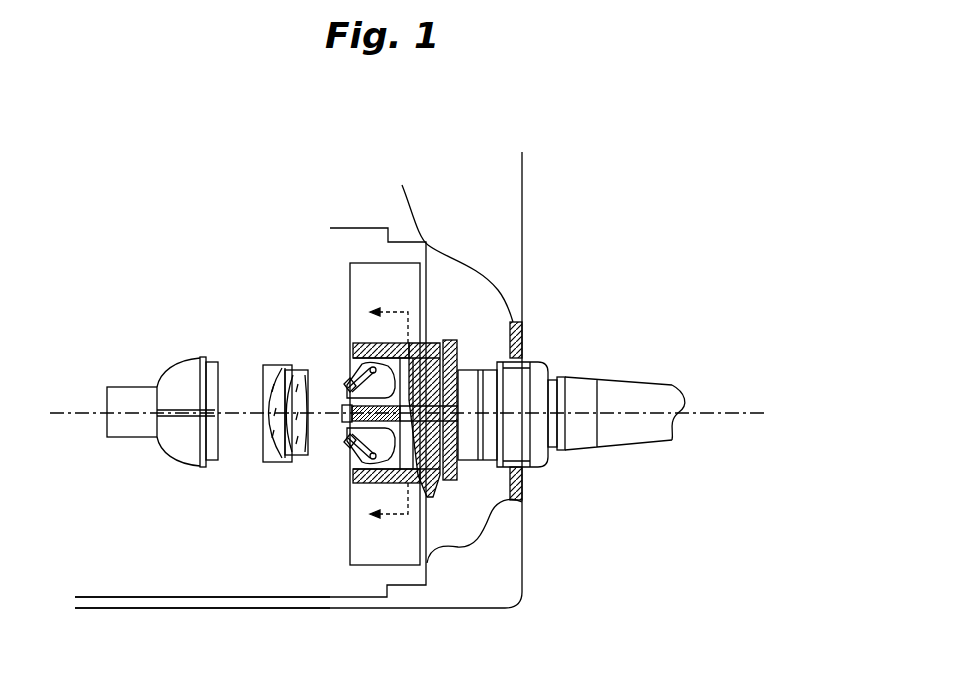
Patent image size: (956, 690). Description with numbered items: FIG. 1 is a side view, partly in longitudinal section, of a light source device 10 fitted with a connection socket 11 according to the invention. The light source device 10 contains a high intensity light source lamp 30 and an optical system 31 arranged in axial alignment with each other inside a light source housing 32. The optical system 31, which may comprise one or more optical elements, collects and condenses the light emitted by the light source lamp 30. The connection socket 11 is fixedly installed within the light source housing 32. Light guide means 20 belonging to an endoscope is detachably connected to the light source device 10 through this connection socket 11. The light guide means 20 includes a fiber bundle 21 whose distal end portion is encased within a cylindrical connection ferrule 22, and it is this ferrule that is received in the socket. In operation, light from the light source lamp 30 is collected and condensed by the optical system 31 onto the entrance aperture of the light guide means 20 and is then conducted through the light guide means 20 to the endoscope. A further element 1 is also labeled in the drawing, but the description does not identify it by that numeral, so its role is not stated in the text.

The light receiving element / blade 1 is at (345, 380).
The light source device 10 is at (571, 266).
The connection socket 11 is at (459, 488).
The light guide means 20 is at (568, 366).
The fiber bundle 21 is at (345, 432).
The connection ferrule 22 is at (447, 380).
The light source lamp 30 is at (189, 362).
The optical system 31 is at (283, 365).
The light source housing 32 is at (273, 610).